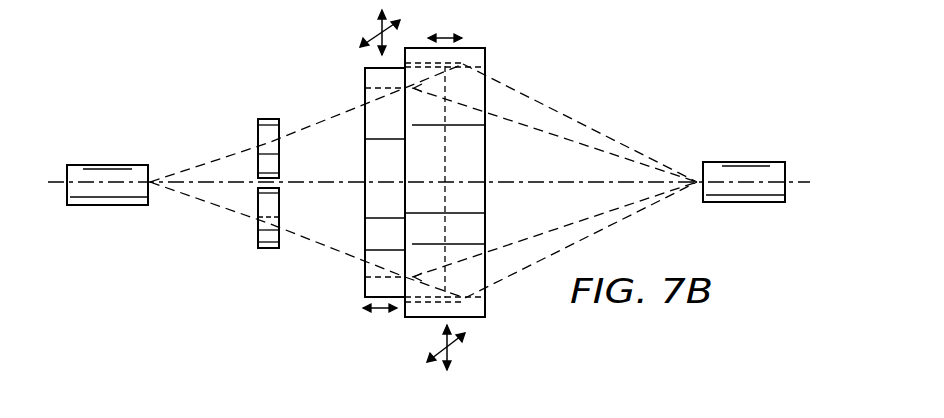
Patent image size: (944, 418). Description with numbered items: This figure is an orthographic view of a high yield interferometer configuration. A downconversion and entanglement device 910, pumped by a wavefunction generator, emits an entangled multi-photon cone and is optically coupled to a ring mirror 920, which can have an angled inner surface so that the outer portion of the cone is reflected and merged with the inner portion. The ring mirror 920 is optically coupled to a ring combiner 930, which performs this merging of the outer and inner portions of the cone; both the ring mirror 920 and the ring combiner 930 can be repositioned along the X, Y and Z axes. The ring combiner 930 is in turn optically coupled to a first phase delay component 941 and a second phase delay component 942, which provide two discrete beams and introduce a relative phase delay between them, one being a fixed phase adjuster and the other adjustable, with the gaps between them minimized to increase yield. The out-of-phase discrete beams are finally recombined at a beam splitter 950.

The downconversion and entanglement device 910 is at (743, 162).
The ring mirror 920 is at (485, 58).
The ring combiner 930 is at (365, 82).
The first phase delay component 941 is at (268, 119).
The second phase delay component 942 is at (268, 248).
The beam splitter 950 is at (108, 165).